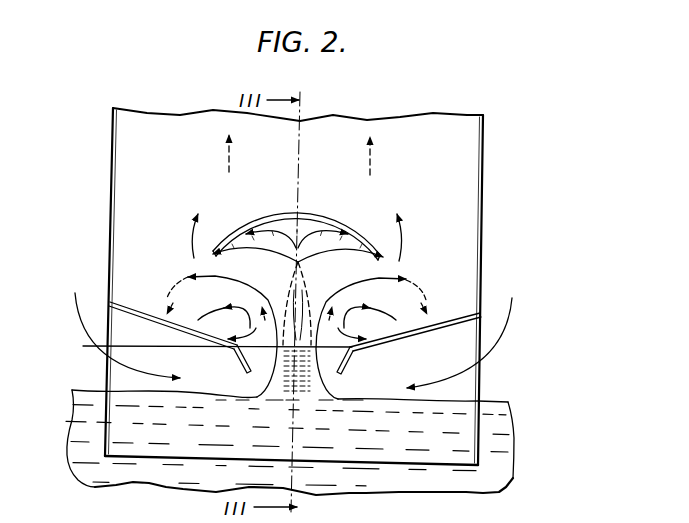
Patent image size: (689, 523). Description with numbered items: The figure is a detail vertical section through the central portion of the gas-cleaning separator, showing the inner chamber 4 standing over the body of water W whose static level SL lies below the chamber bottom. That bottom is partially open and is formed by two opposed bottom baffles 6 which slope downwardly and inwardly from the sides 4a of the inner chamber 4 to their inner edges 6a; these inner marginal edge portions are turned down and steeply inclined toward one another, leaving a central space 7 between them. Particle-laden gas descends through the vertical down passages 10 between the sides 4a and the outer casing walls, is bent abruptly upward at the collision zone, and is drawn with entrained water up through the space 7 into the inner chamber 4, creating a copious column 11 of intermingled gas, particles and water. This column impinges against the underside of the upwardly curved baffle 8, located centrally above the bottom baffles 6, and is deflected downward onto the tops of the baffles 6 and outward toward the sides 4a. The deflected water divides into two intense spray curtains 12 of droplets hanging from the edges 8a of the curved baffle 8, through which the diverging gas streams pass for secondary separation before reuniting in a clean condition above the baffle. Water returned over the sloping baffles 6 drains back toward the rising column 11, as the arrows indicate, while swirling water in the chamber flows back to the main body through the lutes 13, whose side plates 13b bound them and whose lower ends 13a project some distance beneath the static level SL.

The inner chamber 4 is at (465, 197).
The sides of the inner chamber 4a is at (112, 190).
The bottom baffles 6 is at (158, 312).
The inner edges of the baffles 6a is at (294, 363).
The space between inner edges 7 is at (265, 372).
The upwardly curved baffle 8 is at (280, 212).
The edges of the curved baffle 8a is at (210, 252).
The vertical down passages 10 is at (92, 298).
The column of water 11 is at (292, 370).
The spray curtain 12 is at (186, 276).
The lutes 13 is at (481, 380).
The lower ends of the lutes 13a is at (404, 465).
The side plates of the lutes 13b is at (200, 342).
The water W is at (290, 456).
The static level SL is at (500, 402).